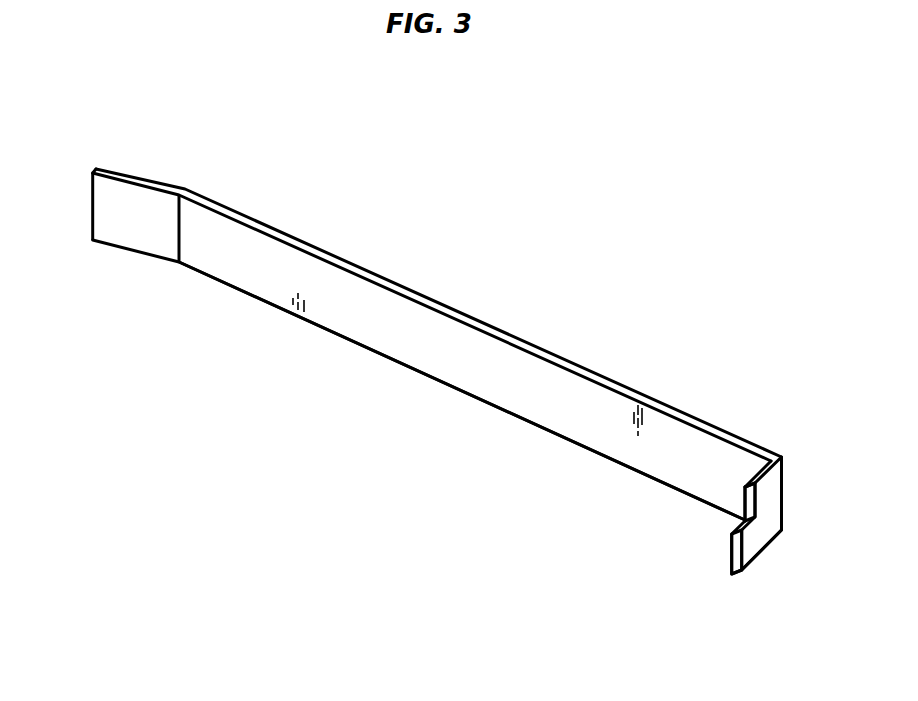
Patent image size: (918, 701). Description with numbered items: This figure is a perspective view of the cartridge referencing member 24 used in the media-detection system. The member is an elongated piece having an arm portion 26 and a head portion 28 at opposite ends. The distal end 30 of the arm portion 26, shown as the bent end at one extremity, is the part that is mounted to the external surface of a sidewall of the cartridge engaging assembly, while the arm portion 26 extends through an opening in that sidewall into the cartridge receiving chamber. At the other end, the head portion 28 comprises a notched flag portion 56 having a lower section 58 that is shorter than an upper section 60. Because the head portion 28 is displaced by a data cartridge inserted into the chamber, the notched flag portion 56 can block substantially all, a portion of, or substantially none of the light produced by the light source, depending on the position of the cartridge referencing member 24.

The cartridge referencing member 24 is at (228, 152).
The arm portion 26 is at (432, 378).
The head portion 28 is at (784, 551).
The distal end 30 is at (92, 212).
The notched flag portion 56 is at (772, 495).
The lower section 58 is at (744, 492).
The upper section 60 is at (753, 562).